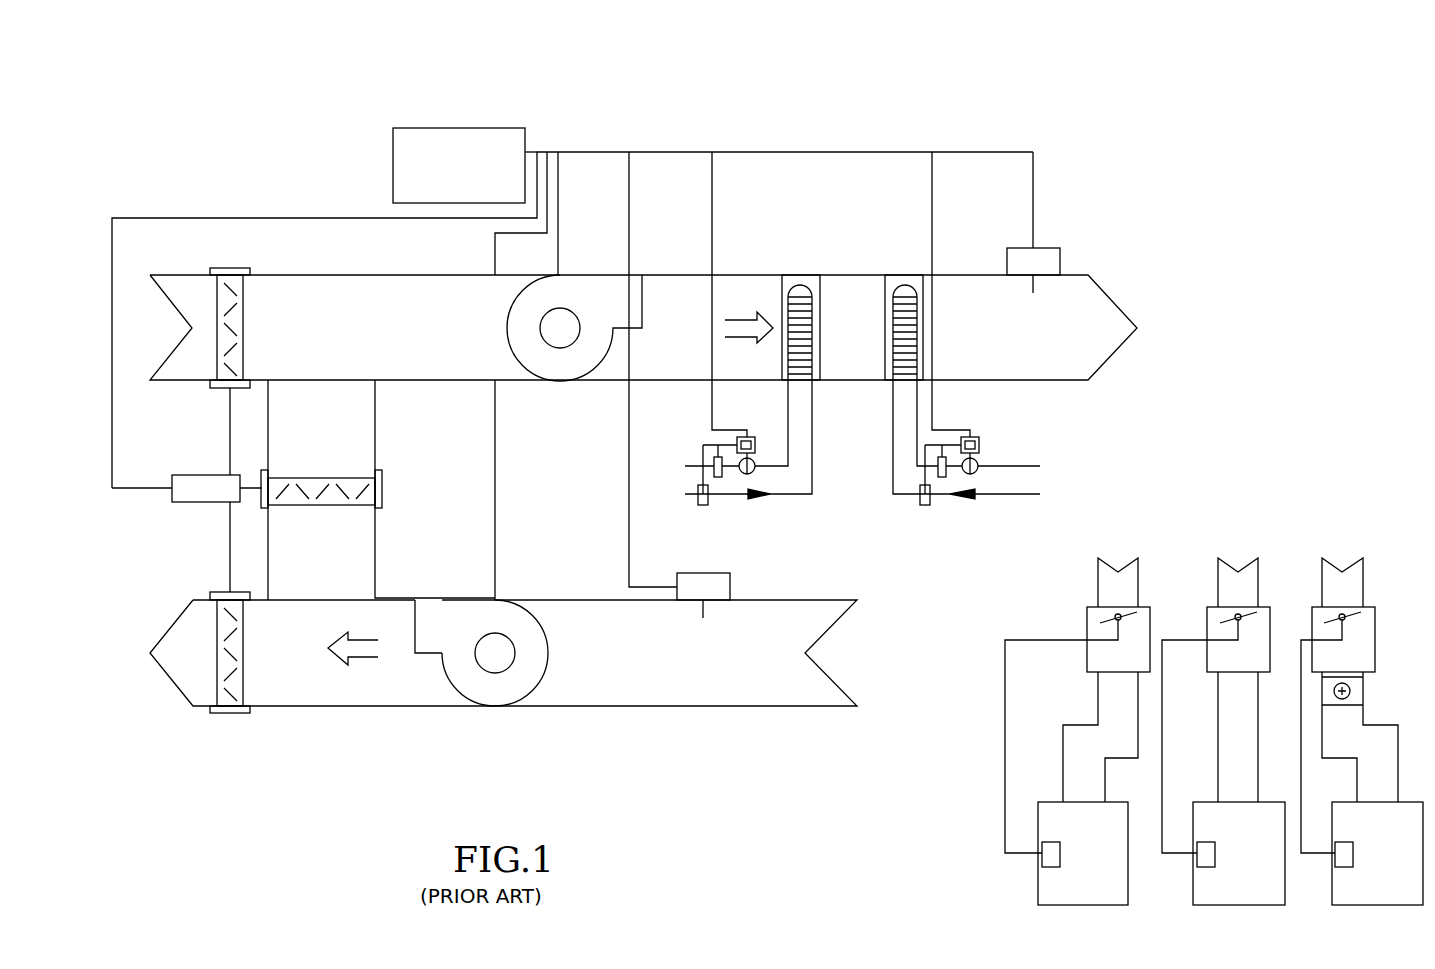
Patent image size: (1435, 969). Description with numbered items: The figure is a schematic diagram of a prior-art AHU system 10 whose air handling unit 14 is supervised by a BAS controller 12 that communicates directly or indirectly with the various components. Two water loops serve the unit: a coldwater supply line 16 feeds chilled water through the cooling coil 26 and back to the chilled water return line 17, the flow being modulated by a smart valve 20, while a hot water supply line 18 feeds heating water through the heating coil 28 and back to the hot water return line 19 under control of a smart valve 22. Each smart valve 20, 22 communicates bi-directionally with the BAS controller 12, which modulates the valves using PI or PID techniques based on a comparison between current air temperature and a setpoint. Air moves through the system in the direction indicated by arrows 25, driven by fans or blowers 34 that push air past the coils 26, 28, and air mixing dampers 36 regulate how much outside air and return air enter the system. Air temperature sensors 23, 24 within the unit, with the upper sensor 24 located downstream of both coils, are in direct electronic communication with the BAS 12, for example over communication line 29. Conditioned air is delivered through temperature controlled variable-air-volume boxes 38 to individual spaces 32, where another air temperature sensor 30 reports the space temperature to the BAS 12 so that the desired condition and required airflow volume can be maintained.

The AHU system 10 is at (1002, 78).
The BAS controller 12 is at (393, 185).
The air handling unit 14 is at (843, 501).
The coldwater supply line 16 is at (735, 497).
The chilled water return line 17 is at (790, 413).
The hot water supply line 18 is at (975, 497).
The hot water return line 19 is at (1015, 465).
The smart valve 20 is at (720, 437).
The smart valve 22 is at (995, 434).
The air temperature sensor 23 is at (730, 588).
The air temperature sensor 24 is at (1020, 248).
The arrows 25 is at (768, 318).
The cooling coil 26 is at (802, 275).
The heating coil 28 is at (905, 275).
The communication line 29 is at (629, 500).
The air temperature sensor 30 is at (1040, 848).
The space 32 is at (1038, 885).
The fan 34 is at (512, 355).
The air mixing damper 36 is at (217, 350).
The variable-air-volume box 38 is at (1300, 521).